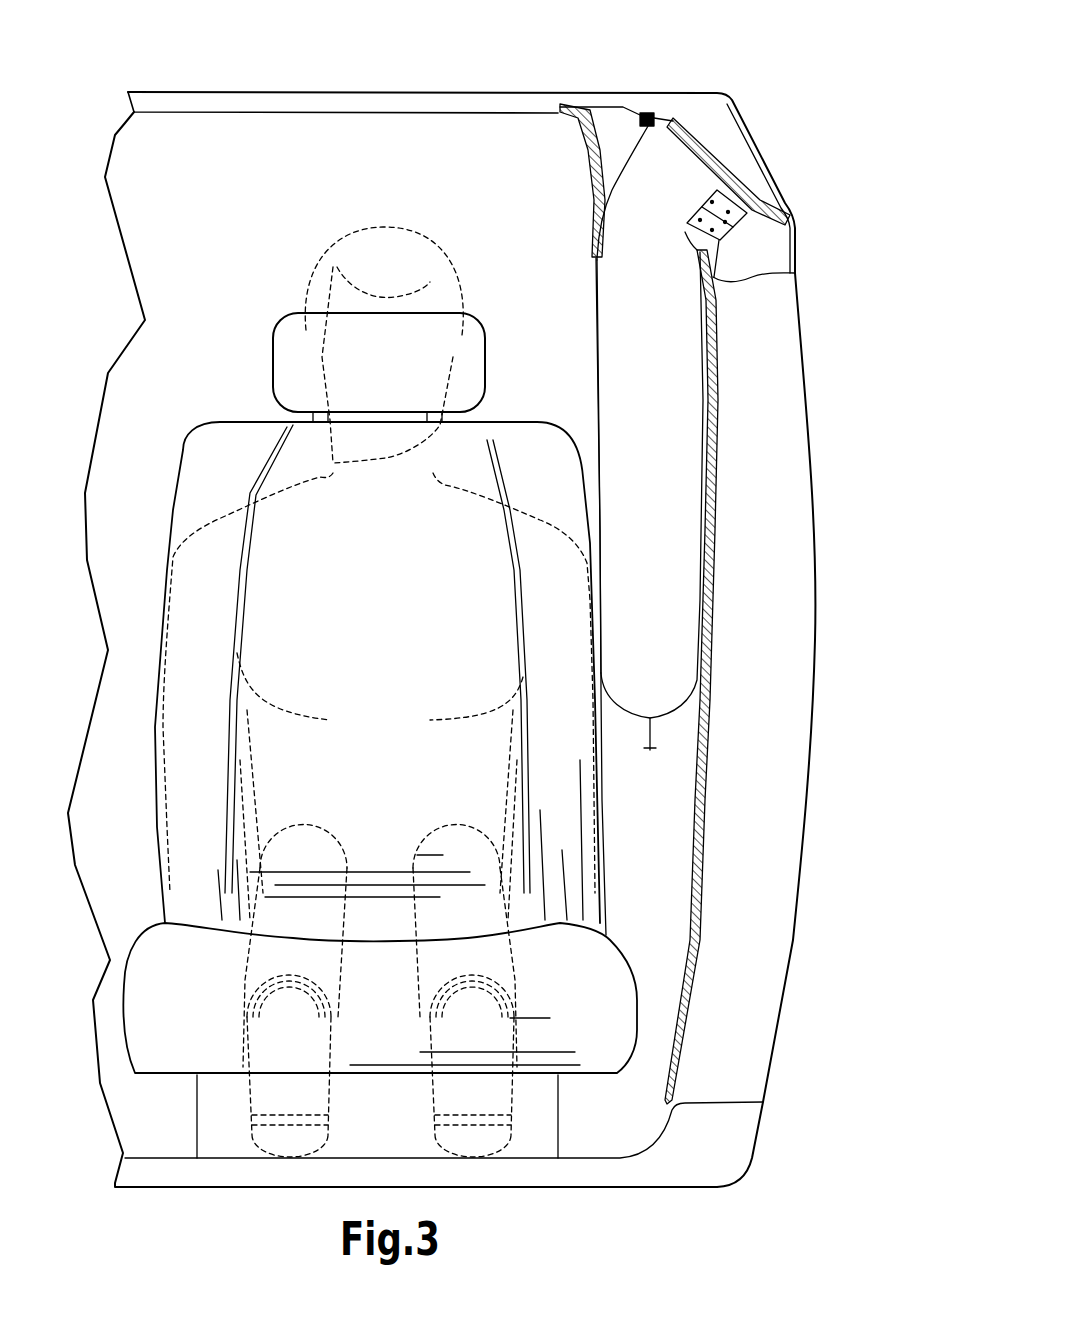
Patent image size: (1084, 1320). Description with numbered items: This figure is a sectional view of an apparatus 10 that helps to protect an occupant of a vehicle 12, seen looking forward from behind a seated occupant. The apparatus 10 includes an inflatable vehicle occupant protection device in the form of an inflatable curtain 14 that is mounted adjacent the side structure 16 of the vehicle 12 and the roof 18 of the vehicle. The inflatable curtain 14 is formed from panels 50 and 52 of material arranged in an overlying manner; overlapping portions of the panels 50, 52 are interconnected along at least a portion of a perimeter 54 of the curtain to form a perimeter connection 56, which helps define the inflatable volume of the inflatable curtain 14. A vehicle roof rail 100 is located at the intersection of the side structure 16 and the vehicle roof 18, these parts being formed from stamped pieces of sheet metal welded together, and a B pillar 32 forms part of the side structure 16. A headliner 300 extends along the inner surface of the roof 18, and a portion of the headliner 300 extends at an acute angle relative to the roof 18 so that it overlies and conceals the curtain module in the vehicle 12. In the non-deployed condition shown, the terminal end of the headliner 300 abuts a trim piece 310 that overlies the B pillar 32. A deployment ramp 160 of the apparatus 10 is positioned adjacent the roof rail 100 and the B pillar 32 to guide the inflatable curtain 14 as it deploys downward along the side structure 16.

The apparatus 10 is at (690, 75).
The vehicle 12 is at (230, 62).
The inflatable curtain 14 is at (593, 333).
The side structure 16 is at (790, 375).
The roof 18 is at (393, 107).
The B pillar 32 is at (755, 252).
The panel 50 is at (700, 345).
The panel 52 is at (595, 392).
The perimeter 54 is at (650, 750).
The perimeter connection 56 is at (653, 747).
The vehicle roof rail 100 is at (780, 128).
The deployment ramp 160 is at (699, 209).
The headliner 300 is at (593, 187).
The trim piece 310 is at (707, 742).